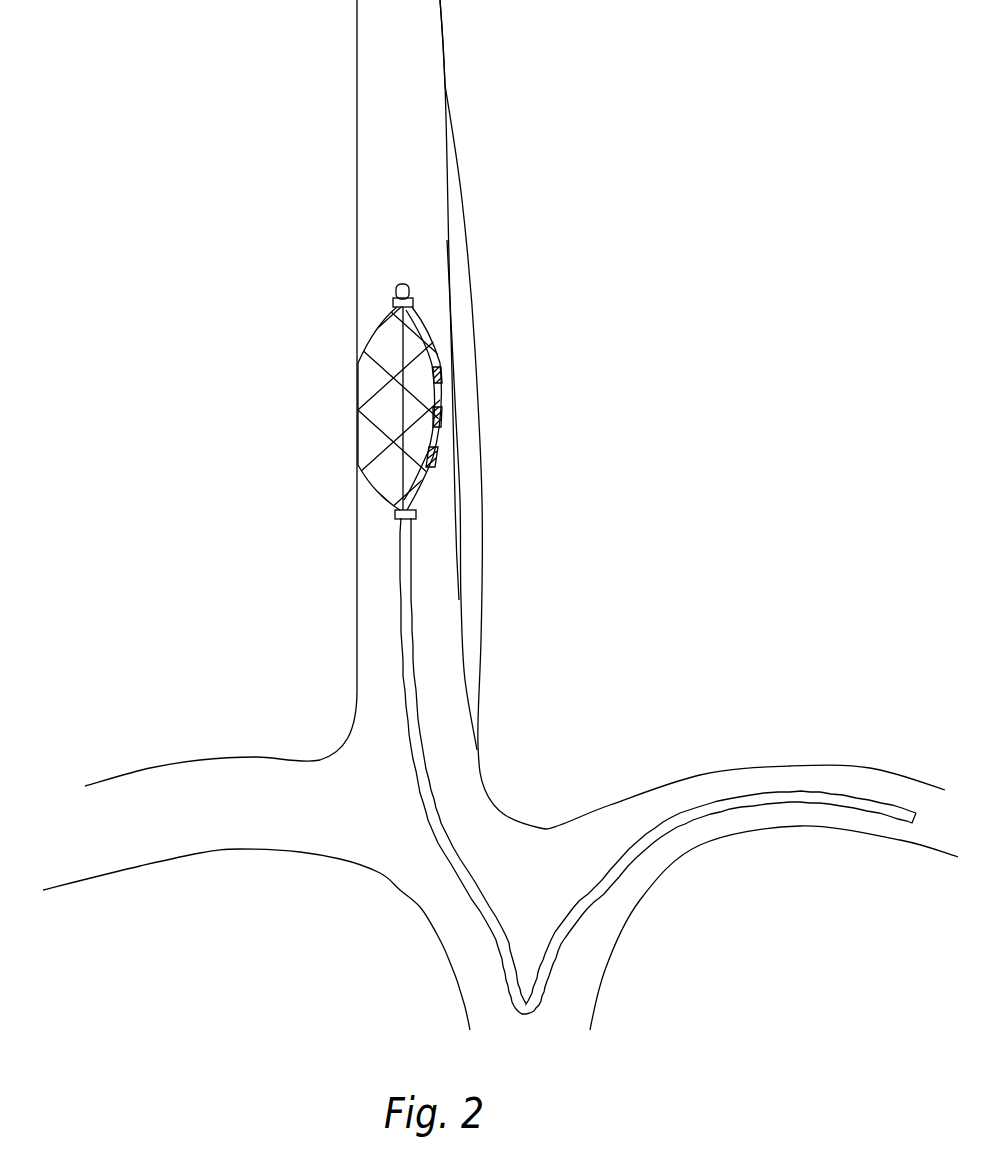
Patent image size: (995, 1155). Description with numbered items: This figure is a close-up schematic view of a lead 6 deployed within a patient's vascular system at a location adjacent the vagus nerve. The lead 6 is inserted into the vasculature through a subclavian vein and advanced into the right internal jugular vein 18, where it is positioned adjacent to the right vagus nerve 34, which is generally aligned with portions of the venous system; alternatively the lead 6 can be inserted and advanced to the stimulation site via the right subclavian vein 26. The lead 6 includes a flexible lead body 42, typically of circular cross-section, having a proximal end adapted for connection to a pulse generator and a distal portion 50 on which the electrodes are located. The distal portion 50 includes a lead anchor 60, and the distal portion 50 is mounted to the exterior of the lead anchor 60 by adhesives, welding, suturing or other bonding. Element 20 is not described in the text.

The lead 6 is at (705, 810).
The right internal jugular vein 18 is at (427, 67).
The balloon 20 is at (443, 413).
The right subclavian vein 26 is at (185, 845).
The right vagus nerve 34 is at (458, 253).
The lead body 42 is at (488, 930).
The distal portion 50 is at (398, 572).
The lead anchor 60 is at (341, 406).